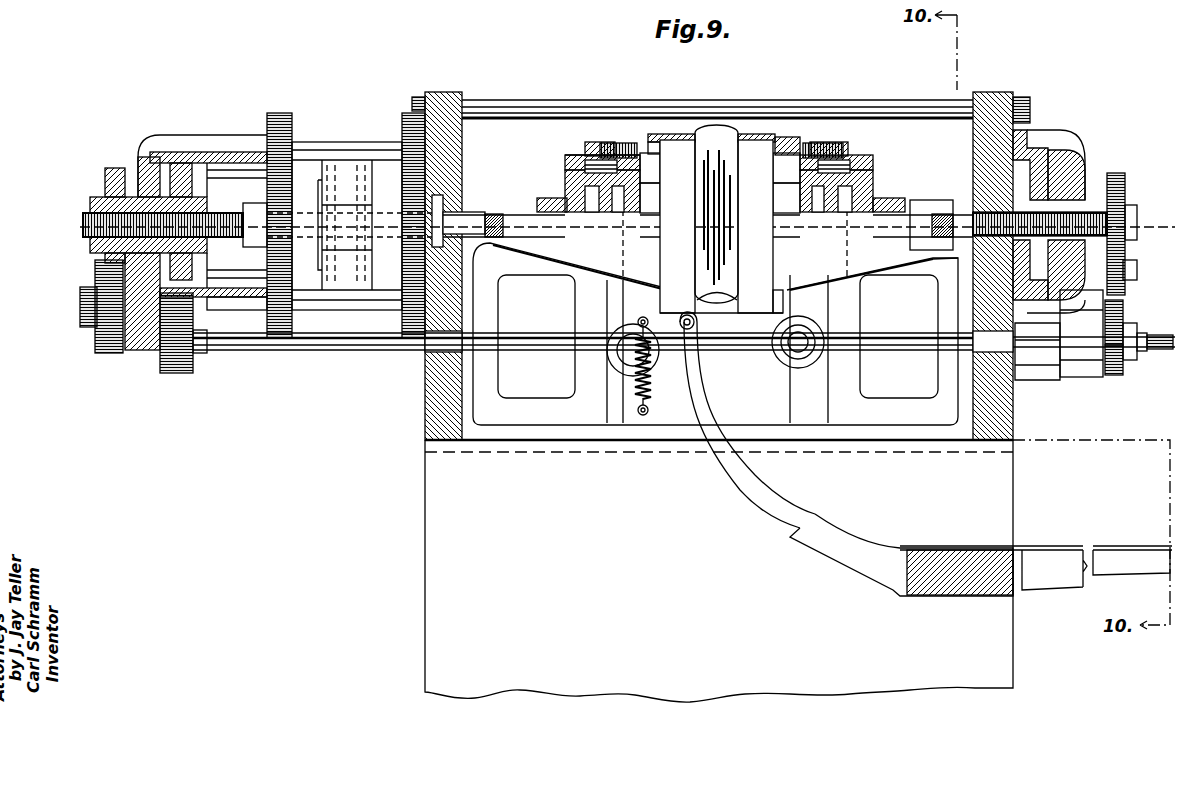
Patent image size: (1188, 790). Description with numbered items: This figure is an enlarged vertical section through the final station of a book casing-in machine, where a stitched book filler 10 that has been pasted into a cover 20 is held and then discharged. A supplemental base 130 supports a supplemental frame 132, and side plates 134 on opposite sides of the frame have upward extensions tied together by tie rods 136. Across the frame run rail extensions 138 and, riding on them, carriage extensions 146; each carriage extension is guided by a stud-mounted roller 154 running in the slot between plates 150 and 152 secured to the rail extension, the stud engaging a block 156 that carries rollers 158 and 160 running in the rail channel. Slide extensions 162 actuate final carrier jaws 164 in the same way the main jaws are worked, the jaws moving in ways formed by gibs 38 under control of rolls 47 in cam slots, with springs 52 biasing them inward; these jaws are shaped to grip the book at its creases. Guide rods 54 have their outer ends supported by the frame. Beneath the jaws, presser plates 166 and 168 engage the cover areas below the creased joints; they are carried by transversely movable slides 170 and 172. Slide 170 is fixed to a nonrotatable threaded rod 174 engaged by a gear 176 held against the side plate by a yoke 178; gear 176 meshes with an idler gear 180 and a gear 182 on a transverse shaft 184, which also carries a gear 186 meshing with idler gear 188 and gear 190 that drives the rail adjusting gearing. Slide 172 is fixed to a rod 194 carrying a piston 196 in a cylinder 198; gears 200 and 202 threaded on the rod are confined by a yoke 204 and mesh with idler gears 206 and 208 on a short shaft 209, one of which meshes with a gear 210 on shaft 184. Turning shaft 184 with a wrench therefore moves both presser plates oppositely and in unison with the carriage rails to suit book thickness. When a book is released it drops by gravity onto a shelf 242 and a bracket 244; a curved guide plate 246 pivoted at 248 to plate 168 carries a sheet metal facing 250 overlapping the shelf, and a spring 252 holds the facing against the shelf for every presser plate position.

The stitched book filler 10 is at (724, 258).
The cover 20 is at (700, 233).
The gib 38 is at (572, 150).
The roll 47 is at (612, 148).
The spring 52 is at (803, 153).
The guide rod 54 is at (625, 362).
The supplemental base 130 is at (1013, 478).
The supplemental frame 132 is at (468, 380).
The side plate 134 is at (425, 388).
The tie rod 136 is at (880, 107).
The rail extension 138 is at (565, 186).
The carriage extension 146 is at (566, 158).
The plate 150 is at (575, 170).
The plate 152 is at (640, 168).
The roller 154 is at (592, 213).
The block 156 is at (640, 196).
The roller 158 is at (577, 213).
The roller 160 is at (618, 213).
The slide extension 162 is at (590, 148).
The carrier jaw 164 is at (662, 137).
The presser plate 166 is at (757, 304).
The presser plate 168 is at (660, 300).
The slide 170 is at (848, 273).
The slide 172 is at (567, 273).
The threaded rod 174 is at (968, 200).
The gear 176 is at (1066, 160).
The yoke 178 is at (1042, 150).
The idler gear 180 is at (975, 288).
The gear 182 is at (1036, 384).
The transverse shaft 184 is at (305, 352).
The gear 186 is at (1115, 378).
The idler gear 188 is at (1124, 304).
The gear 190 is at (1117, 175).
The rod 194 is at (216, 211).
The piston 196 is at (336, 175).
The cylinder 198 is at (306, 142).
The gear 200 is at (182, 170).
The gear 202 is at (112, 168).
The yoke 204 is at (143, 148).
The idler gear 206 is at (207, 347).
The idler gear 208 is at (108, 355).
The short transverse shaft 209 is at (82, 307).
The gear 210 is at (172, 378).
The shelf 242 is at (917, 548).
The bracket 244 is at (1050, 560).
The curved guide plate 246 is at (745, 488).
The pivot 248 is at (693, 318).
The sheet metal facing 250 is at (757, 483).
The spring 252 is at (632, 392).